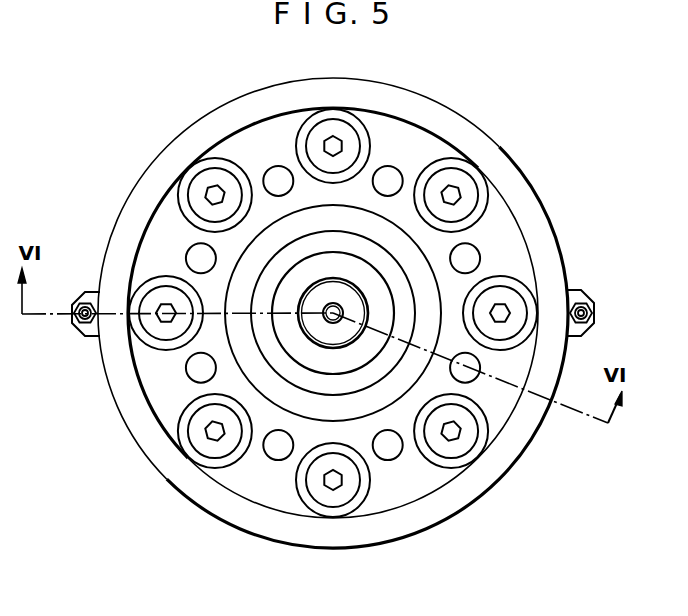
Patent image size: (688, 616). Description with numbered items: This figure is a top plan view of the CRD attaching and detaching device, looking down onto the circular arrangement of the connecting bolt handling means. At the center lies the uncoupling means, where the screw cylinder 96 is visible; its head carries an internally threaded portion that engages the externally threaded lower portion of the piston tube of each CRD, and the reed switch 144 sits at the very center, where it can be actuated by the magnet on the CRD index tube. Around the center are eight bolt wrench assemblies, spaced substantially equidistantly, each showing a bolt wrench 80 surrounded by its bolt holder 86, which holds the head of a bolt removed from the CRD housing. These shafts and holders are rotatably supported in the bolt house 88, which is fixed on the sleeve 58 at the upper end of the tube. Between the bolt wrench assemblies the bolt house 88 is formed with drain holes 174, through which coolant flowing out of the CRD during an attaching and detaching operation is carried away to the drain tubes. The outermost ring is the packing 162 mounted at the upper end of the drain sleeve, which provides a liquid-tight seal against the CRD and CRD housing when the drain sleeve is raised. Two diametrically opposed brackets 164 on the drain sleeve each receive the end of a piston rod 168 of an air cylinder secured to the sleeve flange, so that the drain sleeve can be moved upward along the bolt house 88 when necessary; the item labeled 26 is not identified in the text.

The housing 26 is at (290, 248).
The sleeve 58 is at (247, 258).
The bolt wrench 80 is at (455, 193).
The bolt holder 86 is at (483, 197).
The bolt house 88 is at (513, 227).
The screw cylinder 96 is at (361, 268).
The reed switch 144 is at (340, 311).
The packing 162 is at (440, 108).
The bracket 164 is at (572, 330).
The piston rod 168 is at (582, 300).
The drain hole 174 is at (467, 380).